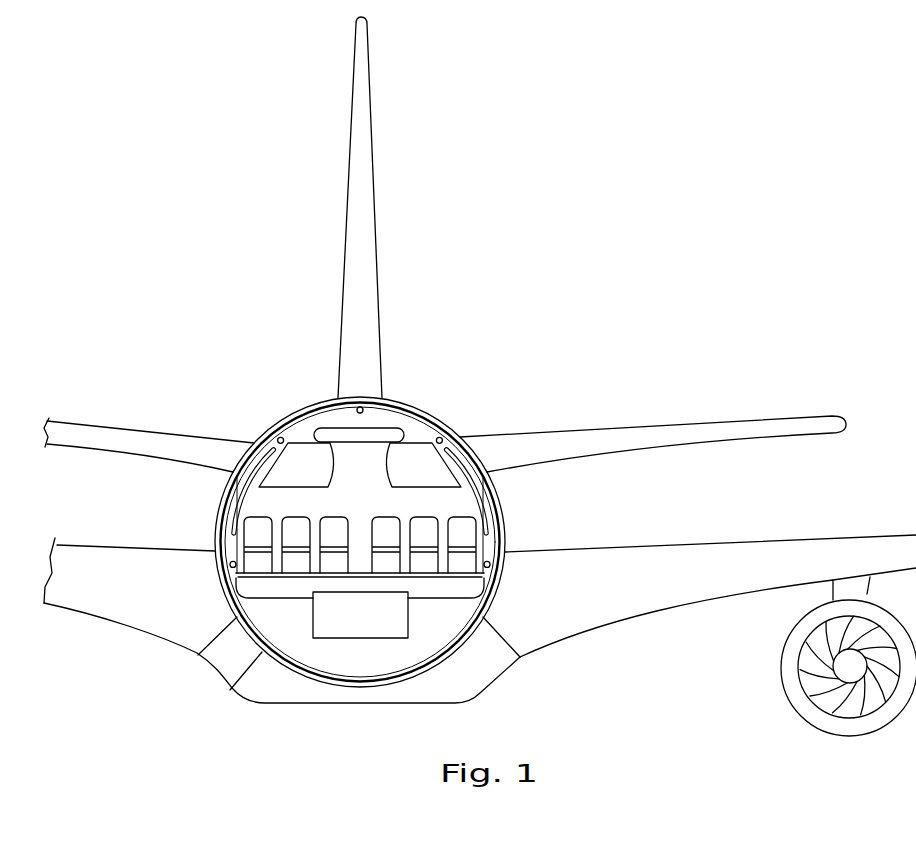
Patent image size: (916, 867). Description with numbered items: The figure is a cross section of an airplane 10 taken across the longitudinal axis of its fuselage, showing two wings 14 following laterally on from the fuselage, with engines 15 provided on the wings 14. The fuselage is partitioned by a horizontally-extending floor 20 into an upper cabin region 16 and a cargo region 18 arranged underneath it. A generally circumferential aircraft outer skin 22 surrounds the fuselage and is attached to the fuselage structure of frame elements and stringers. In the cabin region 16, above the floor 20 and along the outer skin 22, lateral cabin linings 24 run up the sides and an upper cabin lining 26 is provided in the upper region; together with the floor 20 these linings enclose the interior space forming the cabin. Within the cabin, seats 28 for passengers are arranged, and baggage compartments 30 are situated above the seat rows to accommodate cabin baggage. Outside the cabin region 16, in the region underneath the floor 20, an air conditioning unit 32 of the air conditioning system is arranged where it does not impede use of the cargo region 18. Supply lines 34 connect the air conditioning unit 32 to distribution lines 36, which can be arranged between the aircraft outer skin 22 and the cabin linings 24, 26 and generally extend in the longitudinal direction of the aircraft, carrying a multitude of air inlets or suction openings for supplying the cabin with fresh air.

The airplane 10 is at (199, 321).
The wings 14 is at (677, 567).
The engines 15 is at (787, 696).
The upper cabin region 16 is at (375, 463).
The cargo region 18 is at (348, 658).
The floor 20 is at (489, 578).
The aircraft outer skin 22 is at (429, 465).
The lateral cabin linings 24 is at (243, 496).
The upper cabin lining 26 is at (320, 426).
The seats 28 is at (331, 536).
The baggage compartments 30 is at (447, 440).
The air conditioning unit 32 is at (400, 623).
The supply lines 34 is at (242, 457).
The distribution lines 36 is at (278, 437).